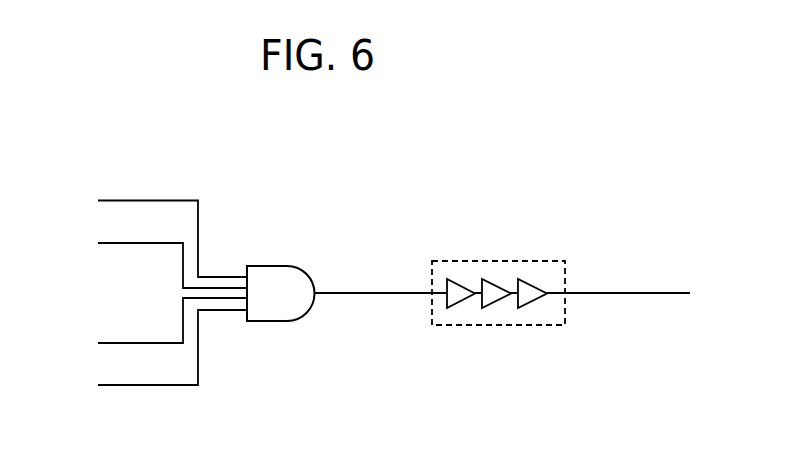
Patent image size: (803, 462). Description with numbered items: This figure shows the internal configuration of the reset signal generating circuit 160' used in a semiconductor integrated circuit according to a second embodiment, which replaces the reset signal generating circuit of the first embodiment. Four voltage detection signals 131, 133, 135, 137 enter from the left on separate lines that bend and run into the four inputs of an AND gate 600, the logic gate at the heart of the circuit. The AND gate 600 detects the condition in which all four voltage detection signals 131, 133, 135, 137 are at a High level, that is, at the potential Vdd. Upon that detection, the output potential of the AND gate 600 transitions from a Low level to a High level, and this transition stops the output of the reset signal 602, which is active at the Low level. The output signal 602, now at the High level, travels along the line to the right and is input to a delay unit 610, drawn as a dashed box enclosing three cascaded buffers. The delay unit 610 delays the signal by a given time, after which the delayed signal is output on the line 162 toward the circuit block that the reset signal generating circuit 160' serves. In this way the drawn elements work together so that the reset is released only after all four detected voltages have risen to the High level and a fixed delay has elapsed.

The voltage detection signal 131 is at (112, 200).
The voltage detection signal 133 is at (112, 243).
The voltage detection signal 135 is at (112, 343).
The voltage detection signal 137 is at (112, 385).
The reset signal generating circuit 160' is at (410, 209).
The AND gate 600 is at (268, 265).
The reset signal 602 is at (355, 292).
The delay unit 610 is at (502, 260).
The reset signal output line 162 is at (617, 294).